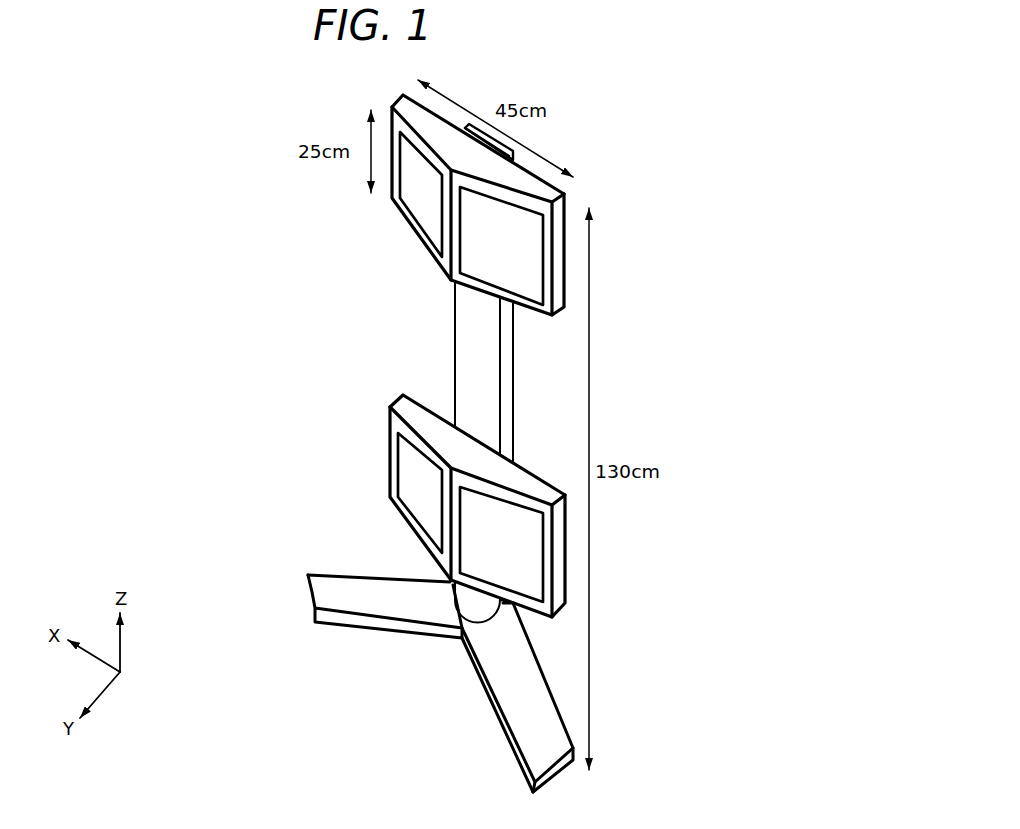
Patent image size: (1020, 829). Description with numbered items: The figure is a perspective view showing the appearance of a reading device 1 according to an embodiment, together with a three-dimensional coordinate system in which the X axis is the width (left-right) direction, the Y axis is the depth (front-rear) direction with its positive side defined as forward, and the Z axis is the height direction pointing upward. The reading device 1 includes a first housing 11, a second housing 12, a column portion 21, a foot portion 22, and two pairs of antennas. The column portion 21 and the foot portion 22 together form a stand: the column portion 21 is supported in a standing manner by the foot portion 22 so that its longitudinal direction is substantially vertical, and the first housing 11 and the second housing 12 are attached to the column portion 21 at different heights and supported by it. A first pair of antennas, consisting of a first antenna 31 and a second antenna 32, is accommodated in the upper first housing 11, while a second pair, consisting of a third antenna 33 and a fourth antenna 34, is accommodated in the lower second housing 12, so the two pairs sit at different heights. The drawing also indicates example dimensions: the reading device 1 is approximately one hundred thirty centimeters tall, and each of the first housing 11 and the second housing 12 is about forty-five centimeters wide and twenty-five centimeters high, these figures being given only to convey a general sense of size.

The reading device 1 is at (611, 101).
The first housing 11 is at (558, 250).
The second housing 12 is at (560, 562).
The column portion 21 is at (477, 382).
The foot portion 22 is at (527, 702).
The first antenna 31 is at (502, 245).
The second antenna 32 is at (421, 192).
The third antenna 33 is at (504, 537).
The fourth antenna 34 is at (406, 481).